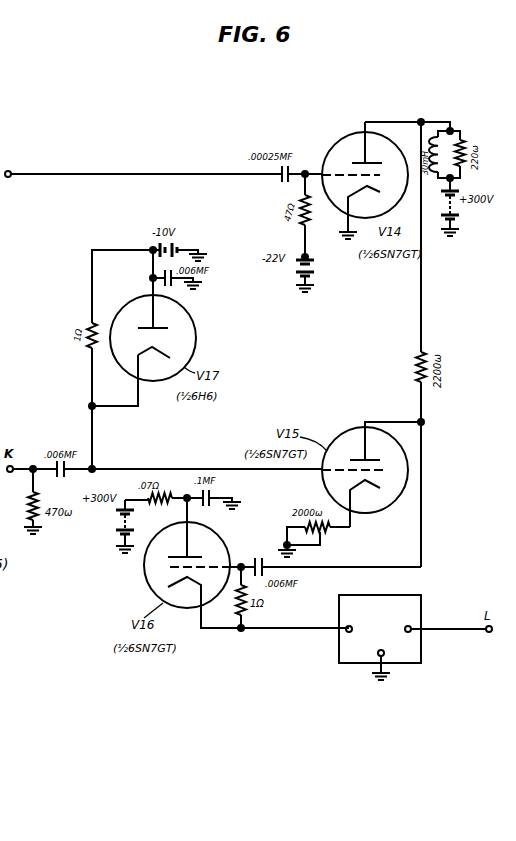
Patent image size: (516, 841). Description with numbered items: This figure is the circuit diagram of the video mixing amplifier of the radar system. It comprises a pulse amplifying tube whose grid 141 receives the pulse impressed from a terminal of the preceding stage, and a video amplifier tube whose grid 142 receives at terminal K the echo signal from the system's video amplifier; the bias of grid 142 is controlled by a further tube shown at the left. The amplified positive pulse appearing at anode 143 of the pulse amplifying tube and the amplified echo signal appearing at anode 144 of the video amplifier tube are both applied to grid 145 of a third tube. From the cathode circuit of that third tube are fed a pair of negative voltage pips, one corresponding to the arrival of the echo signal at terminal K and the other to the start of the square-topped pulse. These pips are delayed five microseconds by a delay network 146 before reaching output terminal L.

The grid 141 is at (340, 174).
The grid 142 is at (378, 474).
The anode 143 is at (352, 162).
The anode 144 is at (380, 459).
The grid 145 is at (147, 583).
The delay network 146 is at (339, 648).